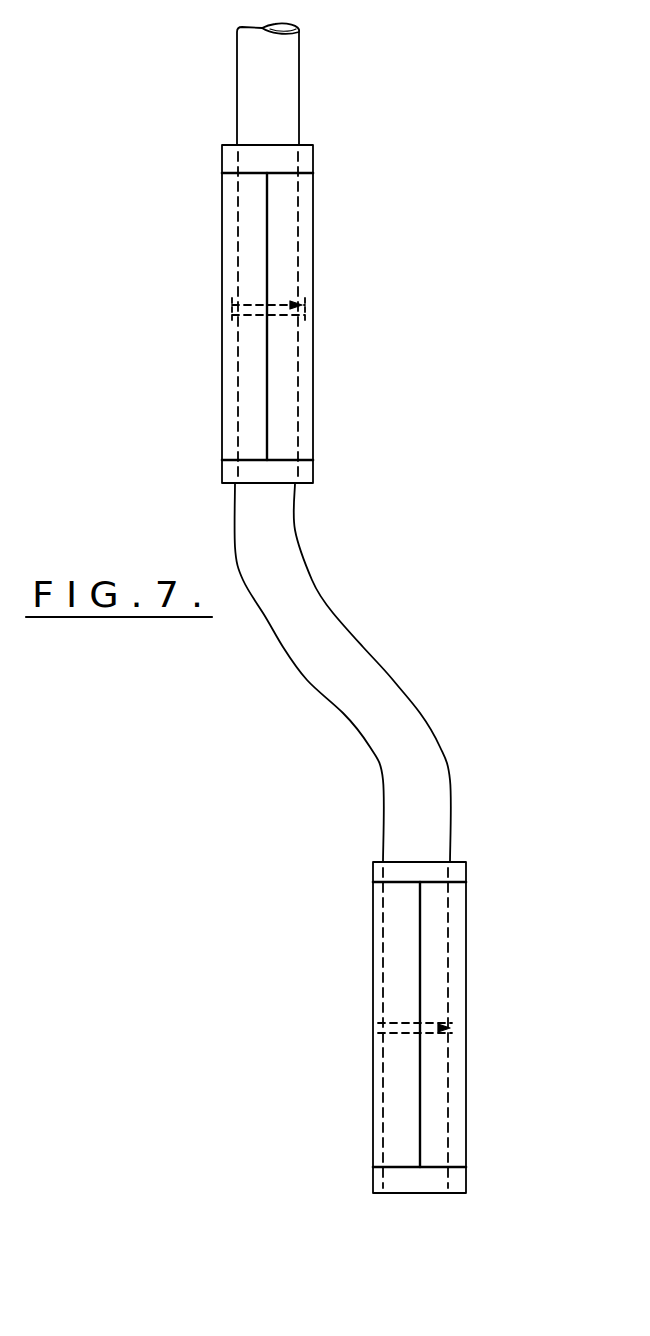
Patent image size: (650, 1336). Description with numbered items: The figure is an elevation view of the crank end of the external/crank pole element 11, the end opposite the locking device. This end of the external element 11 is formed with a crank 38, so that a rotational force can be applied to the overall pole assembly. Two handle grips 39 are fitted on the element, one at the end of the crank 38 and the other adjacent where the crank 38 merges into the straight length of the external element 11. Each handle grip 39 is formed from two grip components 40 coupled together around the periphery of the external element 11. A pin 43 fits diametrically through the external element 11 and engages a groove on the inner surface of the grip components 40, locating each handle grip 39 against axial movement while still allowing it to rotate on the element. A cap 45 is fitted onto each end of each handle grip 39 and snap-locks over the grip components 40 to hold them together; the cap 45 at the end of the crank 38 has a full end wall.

The external/crank pole element 11 is at (253, 80).
The crank 38 is at (353, 682).
The handle grip 39 is at (238, 297).
The grip component 40 is at (222, 232).
The pin 43 is at (313, 305).
The cap 45 is at (237, 156).